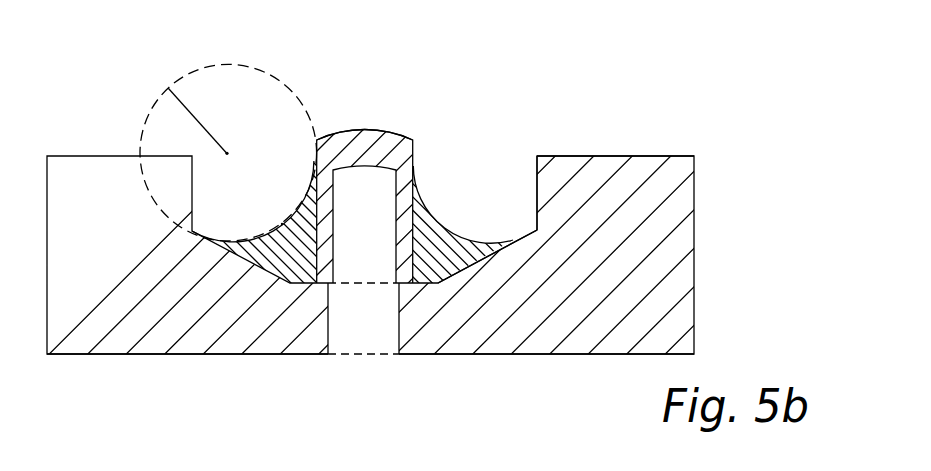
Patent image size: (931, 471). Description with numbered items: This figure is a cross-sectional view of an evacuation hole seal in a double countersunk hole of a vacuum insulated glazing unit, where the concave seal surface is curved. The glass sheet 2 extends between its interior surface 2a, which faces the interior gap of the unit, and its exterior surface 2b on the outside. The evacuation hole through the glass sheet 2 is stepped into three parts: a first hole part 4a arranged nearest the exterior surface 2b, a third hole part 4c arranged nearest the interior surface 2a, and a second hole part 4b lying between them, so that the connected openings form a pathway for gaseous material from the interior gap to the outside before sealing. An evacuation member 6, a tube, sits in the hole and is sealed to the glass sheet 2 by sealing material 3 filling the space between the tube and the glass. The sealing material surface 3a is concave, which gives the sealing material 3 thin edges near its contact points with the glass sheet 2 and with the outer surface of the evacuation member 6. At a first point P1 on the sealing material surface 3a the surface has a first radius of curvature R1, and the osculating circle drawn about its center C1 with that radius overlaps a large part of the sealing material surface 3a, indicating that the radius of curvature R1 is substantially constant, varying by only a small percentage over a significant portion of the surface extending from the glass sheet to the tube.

The glass sheet 2 is at (597, 193).
The interior surface of the glass sheet 2a is at (545, 355).
The exterior surface of the glass sheet 2b is at (577, 156).
The sealing material 3 is at (416, 195).
The sealing material surface 3a is at (448, 228).
The first hole part 4a is at (534, 189).
The second hole part 4b is at (512, 235).
The third hole part 4c is at (382, 345).
The evacuation member 6 is at (413, 142).
The first radius of curvature R1 is at (192, 114).
The center of curvature C1 is at (227, 153).
The first point P1 is at (283, 224).